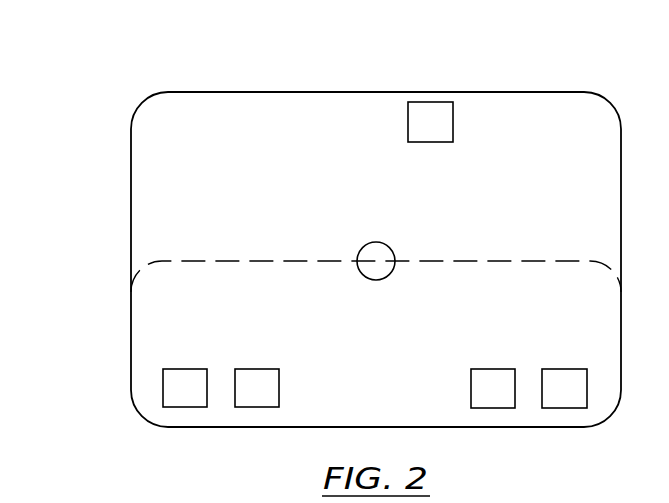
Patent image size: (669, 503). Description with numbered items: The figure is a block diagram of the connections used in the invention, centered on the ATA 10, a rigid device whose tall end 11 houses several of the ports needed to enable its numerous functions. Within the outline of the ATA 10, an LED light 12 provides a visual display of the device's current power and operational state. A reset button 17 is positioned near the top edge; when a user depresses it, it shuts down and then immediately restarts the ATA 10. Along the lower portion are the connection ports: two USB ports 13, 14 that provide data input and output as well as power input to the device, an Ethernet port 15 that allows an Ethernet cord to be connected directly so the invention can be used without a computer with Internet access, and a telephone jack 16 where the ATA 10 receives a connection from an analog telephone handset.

The ATA 10 is at (108, 80).
The tall end 11 is at (237, 117).
The LED light 12 is at (358, 250).
The USB port 13 is at (187, 407).
The USB port 14 is at (256, 407).
The Ethernet port 15 is at (493, 408).
The telephone jack 16 is at (564, 408).
The reset button 17 is at (428, 102).